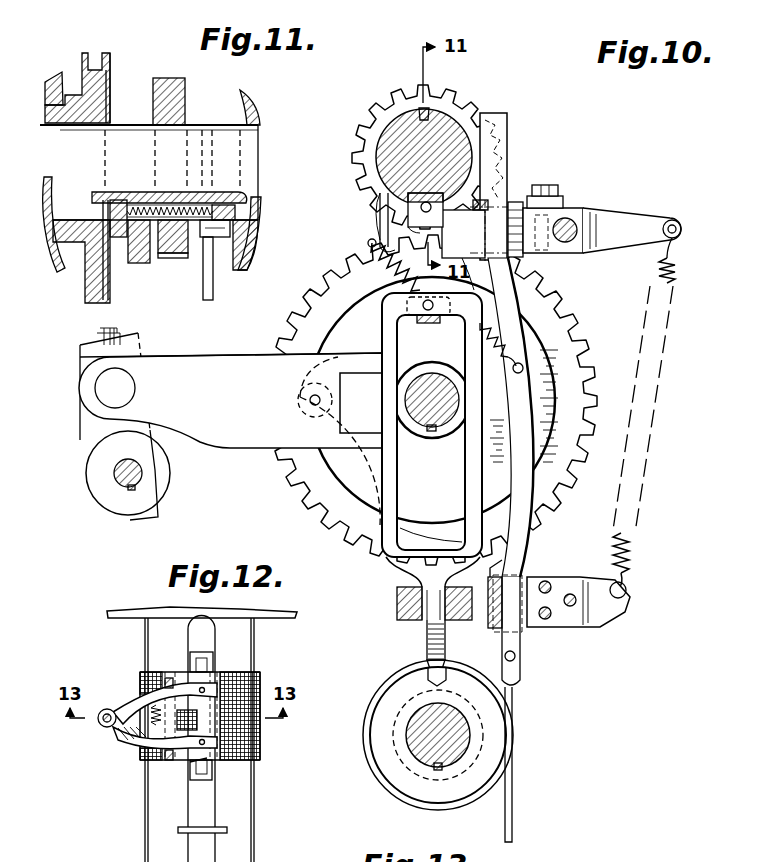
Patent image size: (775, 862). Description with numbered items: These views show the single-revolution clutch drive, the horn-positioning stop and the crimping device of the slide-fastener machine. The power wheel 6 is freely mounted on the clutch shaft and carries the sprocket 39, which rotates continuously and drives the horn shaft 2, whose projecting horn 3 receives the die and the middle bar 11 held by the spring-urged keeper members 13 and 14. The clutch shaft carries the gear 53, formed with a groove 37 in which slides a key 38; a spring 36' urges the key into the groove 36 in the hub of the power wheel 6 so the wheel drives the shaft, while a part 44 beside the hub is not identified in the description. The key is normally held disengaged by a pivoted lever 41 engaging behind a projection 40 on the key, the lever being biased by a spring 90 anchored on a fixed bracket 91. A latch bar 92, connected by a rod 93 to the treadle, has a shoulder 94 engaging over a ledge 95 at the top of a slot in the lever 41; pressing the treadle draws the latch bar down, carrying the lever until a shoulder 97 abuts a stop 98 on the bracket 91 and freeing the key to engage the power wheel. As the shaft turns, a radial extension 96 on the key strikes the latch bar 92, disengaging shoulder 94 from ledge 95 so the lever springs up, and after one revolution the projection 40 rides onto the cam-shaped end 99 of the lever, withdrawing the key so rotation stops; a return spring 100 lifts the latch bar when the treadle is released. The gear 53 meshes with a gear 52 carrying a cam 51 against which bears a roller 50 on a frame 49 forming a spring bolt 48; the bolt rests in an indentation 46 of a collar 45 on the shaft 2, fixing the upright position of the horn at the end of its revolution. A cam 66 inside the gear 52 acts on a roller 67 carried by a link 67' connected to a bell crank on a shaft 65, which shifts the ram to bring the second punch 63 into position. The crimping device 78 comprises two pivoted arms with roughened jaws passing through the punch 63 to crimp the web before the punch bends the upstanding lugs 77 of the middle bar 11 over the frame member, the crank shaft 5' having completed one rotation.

In FIG. 10, the shaft 2 is at (410, 740).
In FIG. 12, the horn 3 is at (255, 634).
In FIG. 11, the crank shaft 5' is at (276, 170).
In FIG. 10, the crank shaft 5' is at (400, 156).
In FIG. 11, the power wheel 6 is at (55, 80).
In FIG. 12, the middle bar 11 is at (190, 763).
In FIG. 12, the keeper member 13 is at (190, 798).
In FIG. 12, the keeper member 14 is at (185, 638).
In FIG. 11, the groove 36 is at (149, 172).
In FIG. 11, the spring 36' is at (169, 191).
In FIG. 11, the groove 37 is at (224, 205).
In FIG. 10, the groove 37 is at (378, 200).
In FIG. 11, the key 38 is at (118, 200).
In FIG. 10, the key 38 is at (380, 240).
In FIG. 11, the sprocket 39 is at (96, 53).
In FIG. 11, the projection 40 is at (160, 258).
In FIG. 10, the projection 40 is at (422, 228).
In FIG. 11, the pivoted lever 41 is at (131, 263).
In FIG. 10, the pivoted lever 41 is at (476, 277).
In FIG. 11, the flange wall 44 is at (115, 75).
In FIG. 10, the collar 45 is at (372, 712).
In FIG. 10, the indentation 46 is at (420, 680).
In FIG. 10, the spring bolt 48 is at (426, 636).
In FIG. 10, the frame 49 is at (382, 476).
In FIG. 10, the roller 50 is at (408, 302).
In FIG. 10, the cam 51 is at (426, 440).
In FIG. 10, the gear 52 is at (552, 287).
In FIG. 11, the gear 53 is at (172, 78).
In FIG. 10, the gear 53 is at (380, 98).
In FIG. 12, the second punch 63 is at (140, 760).
In FIG. 10, the shaft 65 is at (120, 468).
In FIG. 10, the cam 66 is at (322, 322).
In FIG. 10, the roller 67 is at (230, 430).
In FIG. 10, the link 67' is at (231, 347).
In FIG. 12, the upstanding lugs 77 is at (213, 662).
In FIG. 12, the crimping device 78 is at (125, 710).
In FIG. 10, the spring 90 is at (676, 280).
In FIG. 10, the bracket 91 is at (628, 598).
In FIG. 11, the latch bar 92 is at (203, 285).
In FIG. 10, the latch bar 92 is at (500, 113).
In FIG. 10, the rod 93 is at (520, 268).
In FIG. 10, the shoulder 94 is at (485, 200).
In FIG. 10, the ledge 95 is at (478, 231).
In FIG. 11, the radial extension 96 is at (224, 237).
In FIG. 10, the shoulder 97 is at (500, 560).
In FIG. 10, the stop 98 is at (508, 580).
In FIG. 11, the cam-shaped end 99 is at (136, 263).
In FIG. 10, the cam-shaped end 99 is at (380, 225).
In FIG. 10, the return spring 100 is at (512, 358).